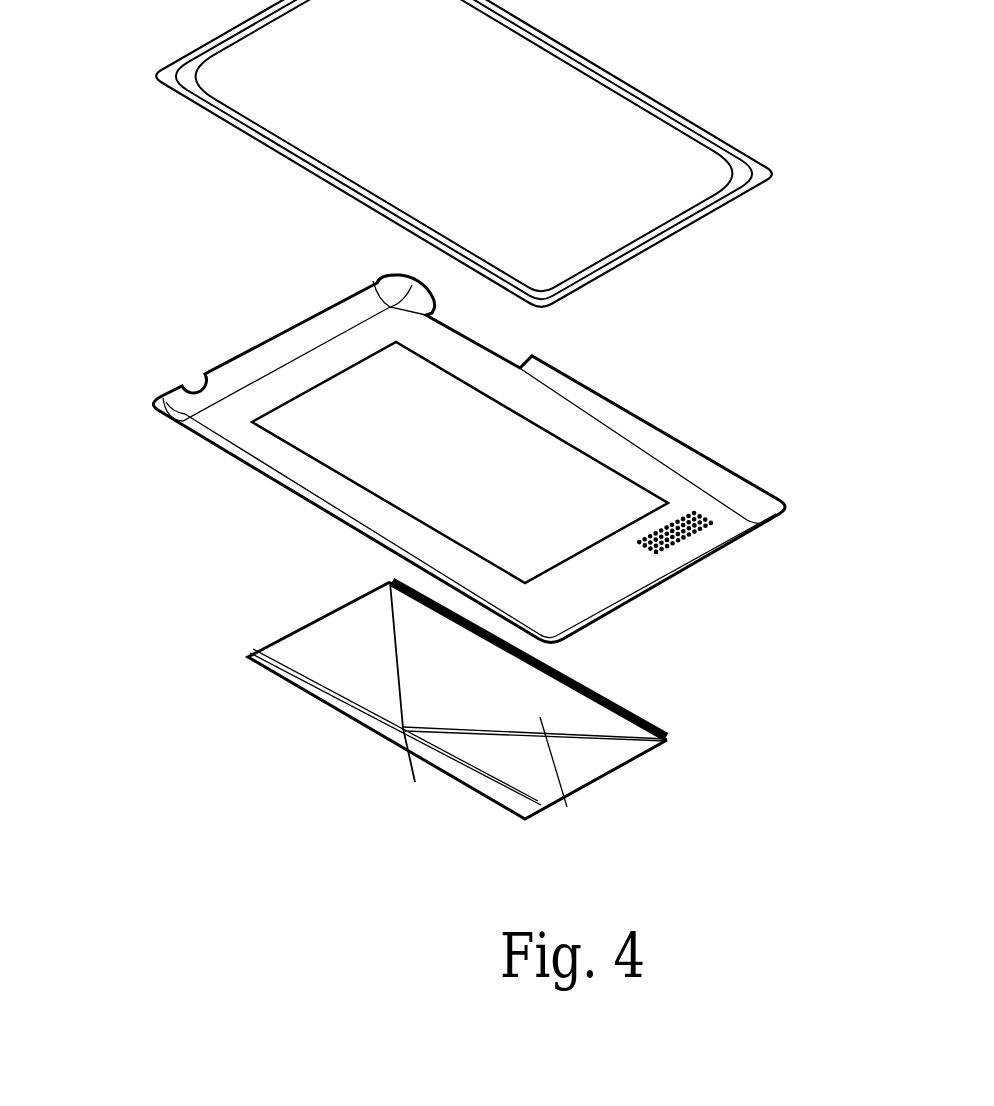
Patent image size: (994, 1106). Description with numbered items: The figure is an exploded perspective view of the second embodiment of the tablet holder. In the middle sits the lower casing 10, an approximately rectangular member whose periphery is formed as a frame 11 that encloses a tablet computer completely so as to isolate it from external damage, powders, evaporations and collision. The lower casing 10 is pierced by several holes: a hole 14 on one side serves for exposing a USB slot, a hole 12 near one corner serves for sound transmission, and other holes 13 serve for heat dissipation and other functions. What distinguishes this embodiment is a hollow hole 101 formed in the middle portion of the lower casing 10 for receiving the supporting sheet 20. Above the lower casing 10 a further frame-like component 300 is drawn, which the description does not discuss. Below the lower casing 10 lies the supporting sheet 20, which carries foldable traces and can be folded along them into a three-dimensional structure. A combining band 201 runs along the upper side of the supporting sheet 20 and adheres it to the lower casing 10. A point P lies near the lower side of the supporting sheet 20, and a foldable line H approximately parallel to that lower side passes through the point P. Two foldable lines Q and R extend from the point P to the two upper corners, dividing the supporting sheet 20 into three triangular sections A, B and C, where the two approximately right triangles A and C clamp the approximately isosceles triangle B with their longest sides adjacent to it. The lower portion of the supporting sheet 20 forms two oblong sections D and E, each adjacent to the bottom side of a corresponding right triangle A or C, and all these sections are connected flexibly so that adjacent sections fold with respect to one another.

The protective frame 300 is at (633, 115).
The lower casing 10 is at (423, 459).
The frame 11 is at (718, 472).
The hole for sound transmission 12 is at (708, 533).
The holes for heat dissipation 13 is at (508, 352).
The hole for exposing a USB slot 14 is at (195, 379).
The hollow hole 101 is at (550, 455).
The supporting sheet 20 is at (471, 695).
The combining band 201 is at (630, 713).
The foldable line Q is at (385, 585).
The right triangular section C is at (343, 622).
The oblong section D is at (320, 688).
The foldable line H is at (372, 713).
The point P is at (405, 797).
The oblong section E is at (468, 778).
The isosceles triangular section B is at (557, 774).
The right triangular section A is at (603, 758).
The foldable line R is at (653, 745).